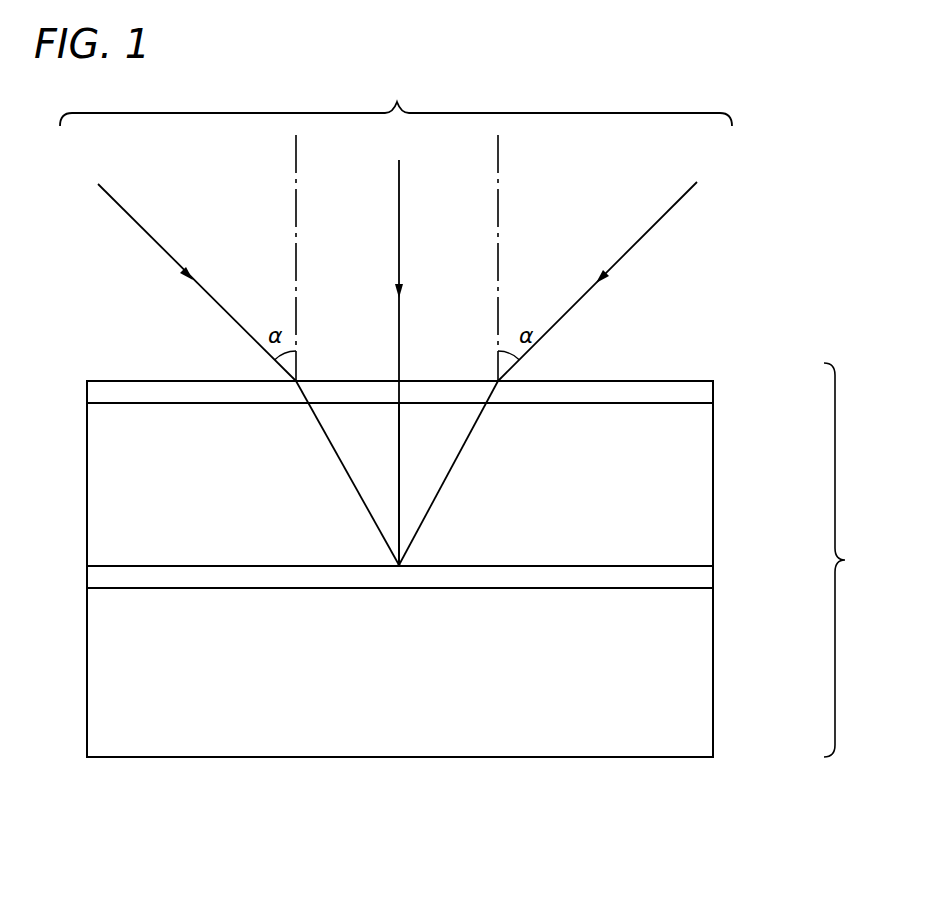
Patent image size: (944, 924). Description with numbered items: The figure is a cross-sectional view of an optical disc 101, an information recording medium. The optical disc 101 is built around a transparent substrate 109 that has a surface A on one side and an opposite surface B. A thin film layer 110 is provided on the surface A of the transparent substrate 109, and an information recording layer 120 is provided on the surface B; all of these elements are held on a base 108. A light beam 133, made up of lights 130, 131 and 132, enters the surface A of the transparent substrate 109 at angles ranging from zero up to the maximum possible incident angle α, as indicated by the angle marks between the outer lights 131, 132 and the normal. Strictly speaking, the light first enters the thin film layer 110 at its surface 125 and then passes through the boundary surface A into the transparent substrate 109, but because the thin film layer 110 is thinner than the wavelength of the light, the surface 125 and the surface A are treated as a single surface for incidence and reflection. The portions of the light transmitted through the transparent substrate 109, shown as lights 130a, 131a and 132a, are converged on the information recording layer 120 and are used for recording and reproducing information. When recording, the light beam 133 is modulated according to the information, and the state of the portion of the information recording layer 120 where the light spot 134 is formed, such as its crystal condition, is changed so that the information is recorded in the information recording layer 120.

The optical disc 101 is at (489, 560).
The base 108 is at (697, 710).
The transparent substrate 109 is at (693, 495).
The thin film layer 110 is at (704, 393).
The information recording layer 120 is at (652, 583).
The surface of the thin film layer 125 is at (663, 380).
The light 130 is at (399, 183).
The transmitted light 130a is at (400, 453).
The light 131 is at (128, 216).
The transmitted light 131a is at (362, 500).
The light 132 is at (678, 203).
The transmitted light 132a is at (445, 483).
The light beam 133 is at (396, 225).
The light spot 134 is at (402, 563).
The surface A is at (675, 403).
The surface B is at (670, 565).